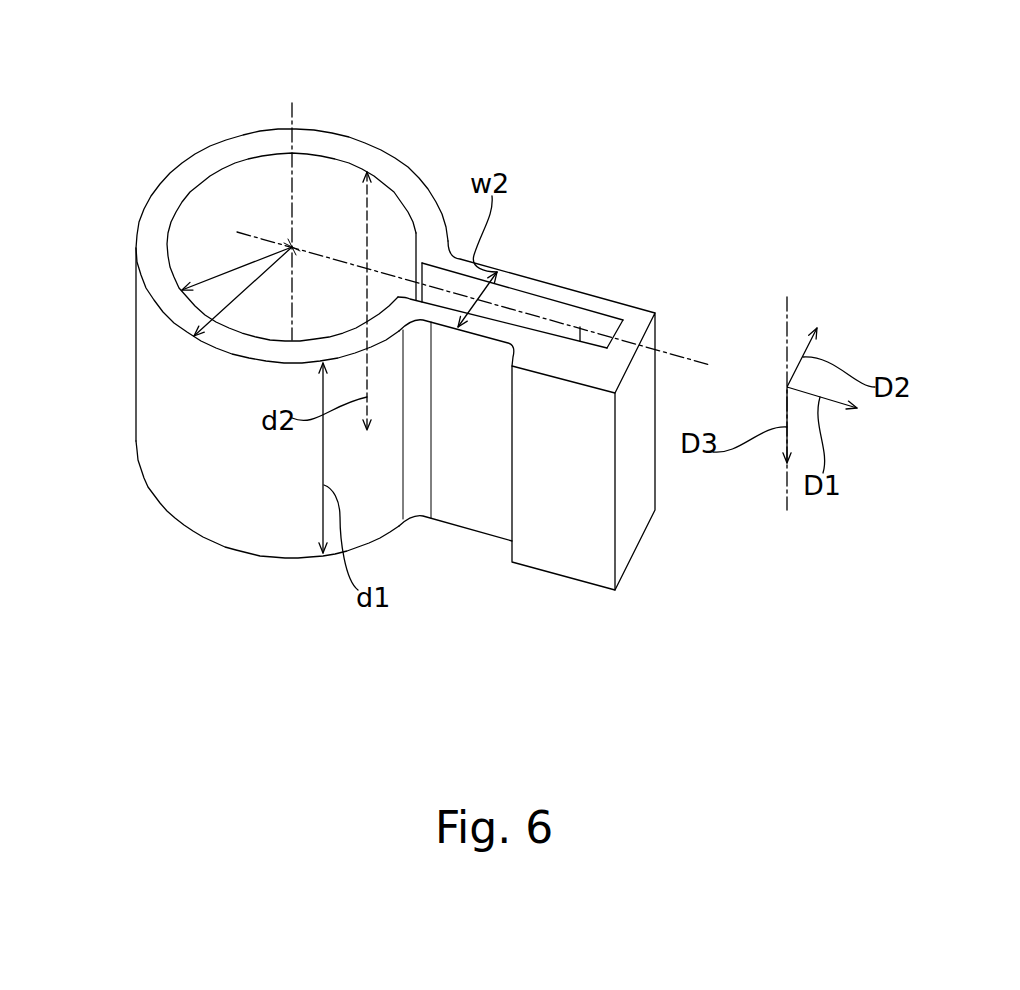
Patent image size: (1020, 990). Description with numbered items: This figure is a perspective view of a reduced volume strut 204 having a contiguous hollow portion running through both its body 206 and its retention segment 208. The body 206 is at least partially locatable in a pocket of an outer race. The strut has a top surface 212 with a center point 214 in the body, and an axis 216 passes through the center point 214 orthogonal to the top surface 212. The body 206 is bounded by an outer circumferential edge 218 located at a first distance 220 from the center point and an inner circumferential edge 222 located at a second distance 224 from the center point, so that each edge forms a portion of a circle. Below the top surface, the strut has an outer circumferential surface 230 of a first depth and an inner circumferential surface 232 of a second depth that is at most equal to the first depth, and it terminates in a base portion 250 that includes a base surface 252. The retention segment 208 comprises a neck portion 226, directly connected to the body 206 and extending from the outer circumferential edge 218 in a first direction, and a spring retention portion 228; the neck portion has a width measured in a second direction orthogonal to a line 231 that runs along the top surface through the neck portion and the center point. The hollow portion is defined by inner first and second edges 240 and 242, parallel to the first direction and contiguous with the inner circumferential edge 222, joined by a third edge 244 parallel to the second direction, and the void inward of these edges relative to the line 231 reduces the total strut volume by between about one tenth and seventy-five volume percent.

The strut 204 is at (512, 141).
The body 206 is at (320, 110).
The retention segment 208 is at (522, 258).
The top surface 212 is at (162, 197).
The center point 214 is at (292, 247).
The axis 216 is at (292, 112).
The outer circumferential edge 218 is at (172, 171).
The distance 220 is at (230, 300).
The inner circumferential edge 222 is at (217, 189).
The distance 224 is at (231, 267).
The neck portion 226 is at (482, 334).
The spring retention portion 228 is at (572, 383).
The outer circumferential surface 230 is at (160, 392).
The line 231 is at (697, 357).
The inner circumferential surface 232 is at (388, 218).
The first edge 240 is at (548, 285).
The second edge 242 is at (582, 328).
The third edge 244 is at (623, 322).
The base portion 250 is at (152, 497).
The base surface 252 is at (185, 537).